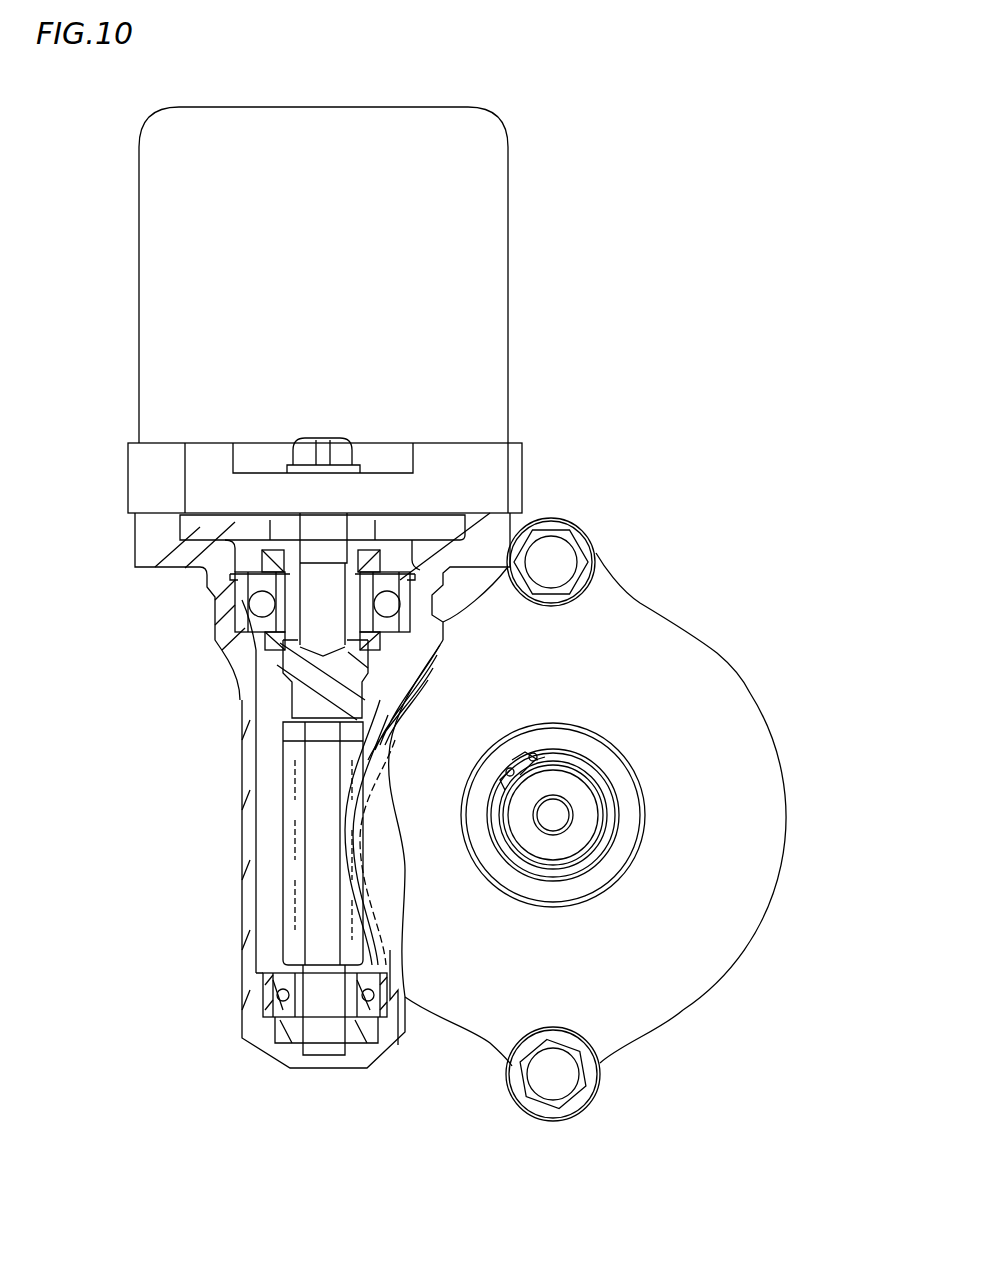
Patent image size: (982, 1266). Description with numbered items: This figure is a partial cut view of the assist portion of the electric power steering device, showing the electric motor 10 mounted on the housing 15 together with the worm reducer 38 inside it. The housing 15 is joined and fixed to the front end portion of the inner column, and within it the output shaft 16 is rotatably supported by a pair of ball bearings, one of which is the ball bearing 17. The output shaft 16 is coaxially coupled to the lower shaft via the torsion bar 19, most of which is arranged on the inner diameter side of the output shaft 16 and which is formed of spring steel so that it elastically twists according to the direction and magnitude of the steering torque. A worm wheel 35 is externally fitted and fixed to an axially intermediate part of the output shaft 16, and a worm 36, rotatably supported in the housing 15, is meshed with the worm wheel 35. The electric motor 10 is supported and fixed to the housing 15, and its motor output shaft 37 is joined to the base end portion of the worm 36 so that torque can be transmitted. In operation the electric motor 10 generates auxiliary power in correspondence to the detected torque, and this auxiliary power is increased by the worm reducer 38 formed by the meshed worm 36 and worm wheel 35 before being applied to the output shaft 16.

The electric motor 10 is at (457, 196).
The housing 15 is at (729, 806).
The output shaft 16 is at (562, 788).
The ball bearing 17 is at (613, 765).
The torsion bar 19 is at (560, 812).
The worm wheel 35 is at (390, 918).
The worm 36 is at (322, 812).
The motor output shaft 37 is at (318, 607).
The worm reducer 38 is at (290, 885).